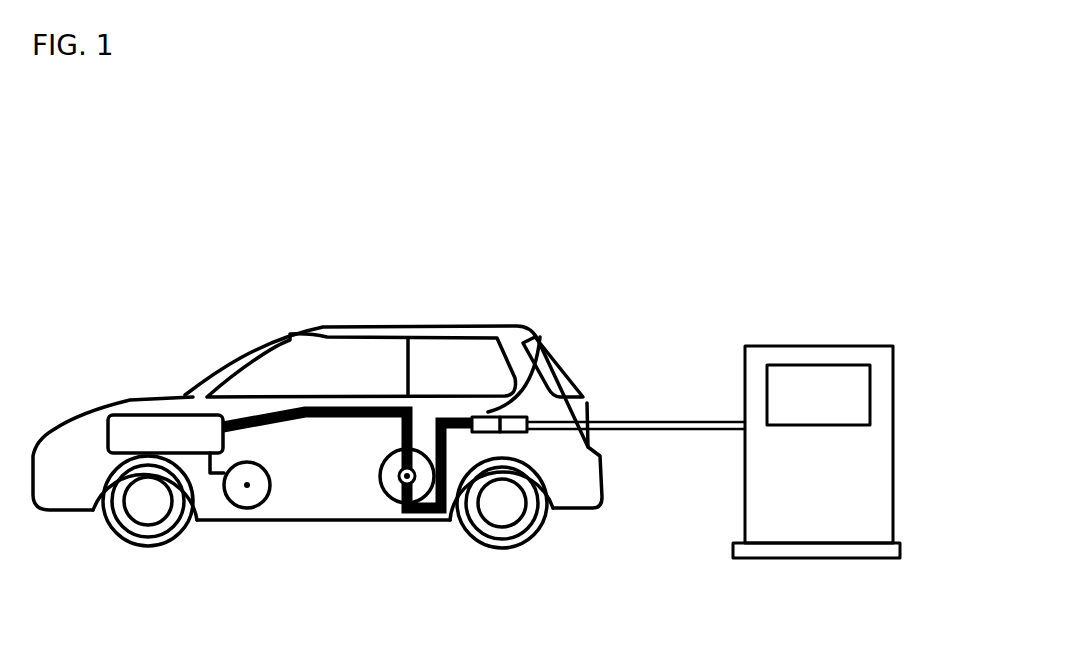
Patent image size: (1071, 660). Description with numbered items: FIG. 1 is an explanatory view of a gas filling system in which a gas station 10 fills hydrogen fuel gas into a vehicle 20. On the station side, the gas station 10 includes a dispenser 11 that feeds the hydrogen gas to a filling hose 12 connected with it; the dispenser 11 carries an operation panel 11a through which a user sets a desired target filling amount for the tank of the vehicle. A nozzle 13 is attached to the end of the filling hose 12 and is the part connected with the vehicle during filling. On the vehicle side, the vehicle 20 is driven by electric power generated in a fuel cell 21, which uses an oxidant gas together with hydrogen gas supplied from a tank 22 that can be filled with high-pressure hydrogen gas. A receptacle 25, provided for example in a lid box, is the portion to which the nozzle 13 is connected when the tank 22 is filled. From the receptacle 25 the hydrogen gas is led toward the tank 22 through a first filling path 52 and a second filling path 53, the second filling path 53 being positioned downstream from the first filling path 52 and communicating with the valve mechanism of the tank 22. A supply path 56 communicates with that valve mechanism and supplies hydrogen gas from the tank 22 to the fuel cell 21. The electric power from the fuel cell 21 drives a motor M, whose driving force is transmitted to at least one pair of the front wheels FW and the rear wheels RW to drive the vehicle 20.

The gas station 10 is at (840, 394).
The dispenser 11 is at (892, 477).
The operation panel 11a is at (872, 391).
The filling hose 12 is at (690, 420).
The nozzle 13 is at (500, 413).
The vehicle 20 is at (335, 390).
The fuel cell 21 is at (135, 415).
The tank 22 is at (395, 488).
The receptacle 25 is at (522, 413).
The first filling path 52 is at (448, 416).
The second filling path 53 is at (441, 419).
The supply path 56 is at (352, 407).
The motor M is at (247, 509).
The front wheels FW is at (148, 547).
The rear wheels RW is at (500, 548).